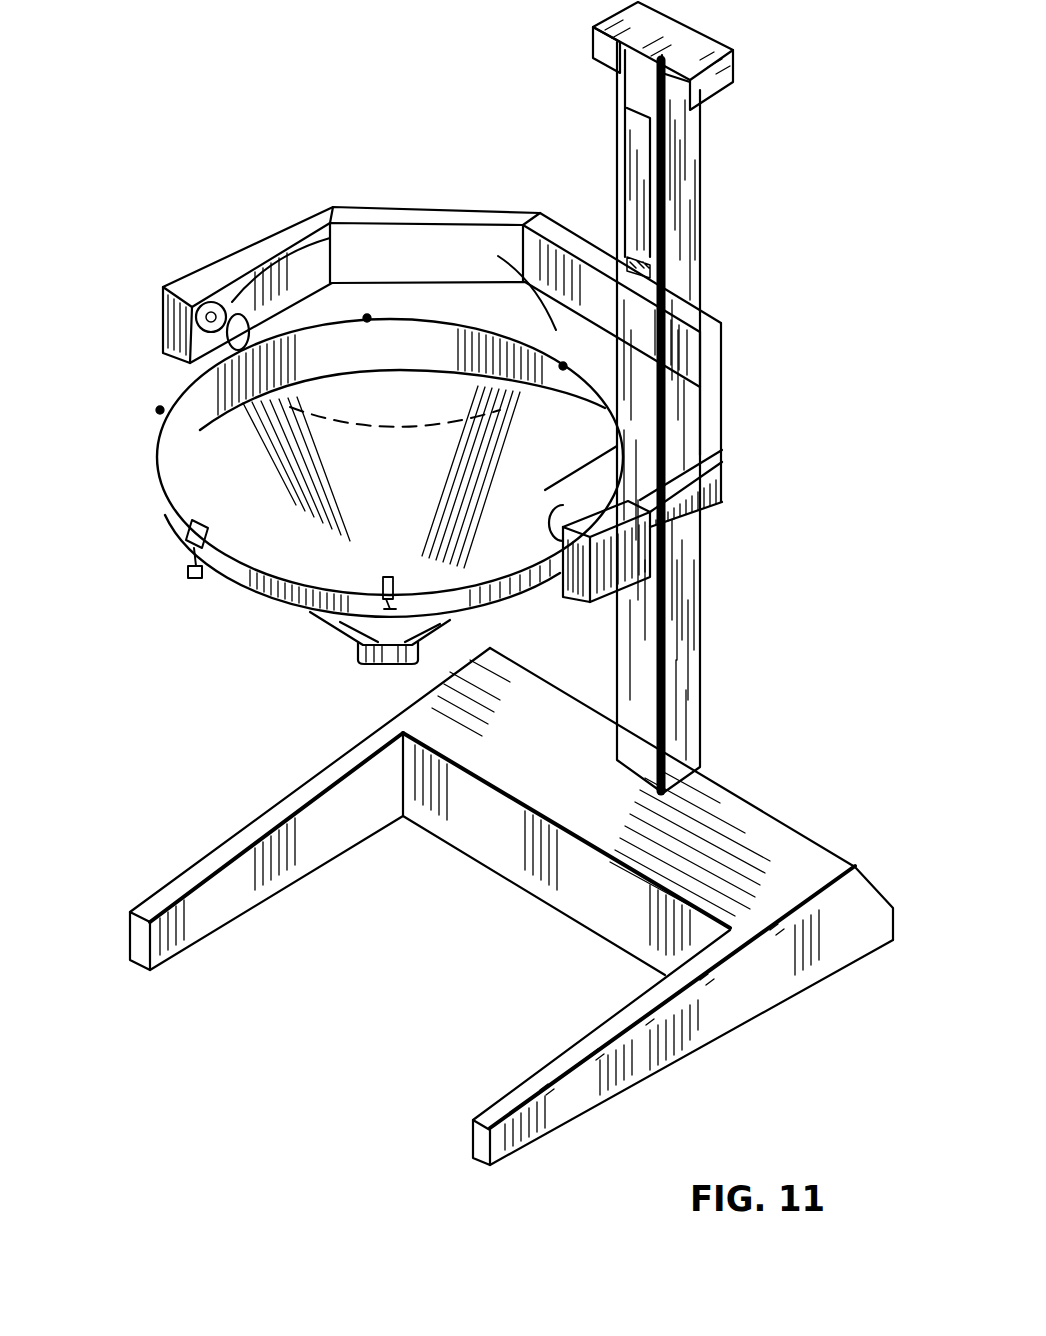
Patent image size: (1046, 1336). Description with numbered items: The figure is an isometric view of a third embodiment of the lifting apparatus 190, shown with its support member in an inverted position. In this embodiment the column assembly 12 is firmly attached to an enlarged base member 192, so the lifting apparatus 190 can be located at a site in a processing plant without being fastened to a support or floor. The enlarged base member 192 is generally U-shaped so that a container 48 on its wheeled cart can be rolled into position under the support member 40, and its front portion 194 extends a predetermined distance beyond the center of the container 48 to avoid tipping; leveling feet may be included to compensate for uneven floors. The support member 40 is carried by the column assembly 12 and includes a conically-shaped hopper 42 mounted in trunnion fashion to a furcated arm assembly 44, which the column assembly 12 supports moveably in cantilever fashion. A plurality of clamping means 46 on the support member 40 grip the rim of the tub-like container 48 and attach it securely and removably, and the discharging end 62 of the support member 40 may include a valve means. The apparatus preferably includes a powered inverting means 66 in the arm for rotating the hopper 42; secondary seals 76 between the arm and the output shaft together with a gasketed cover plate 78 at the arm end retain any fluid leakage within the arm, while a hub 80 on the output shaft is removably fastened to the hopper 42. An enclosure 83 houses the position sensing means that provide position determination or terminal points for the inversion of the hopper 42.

The column assembly 12 is at (714, 221).
The second support member 40 is at (334, 203).
The conically-shaped hopper 42 is at (270, 605).
The furcated arm assembly 44 is at (722, 408).
The clamping means 46 is at (186, 551).
The tub-like container 48 is at (481, 250).
The discharging end 62 is at (367, 655).
The powered inverting means 66 is at (724, 502).
The secondary seals 76 is at (214, 300).
The gasketed cover plate 78 is at (226, 343).
The hub 80 is at (190, 302).
The enclosure 83 is at (633, 560).
The lifting apparatus 190 is at (190, 751).
The enlarged base member 192 is at (795, 827).
The front portion 194 is at (130, 957).